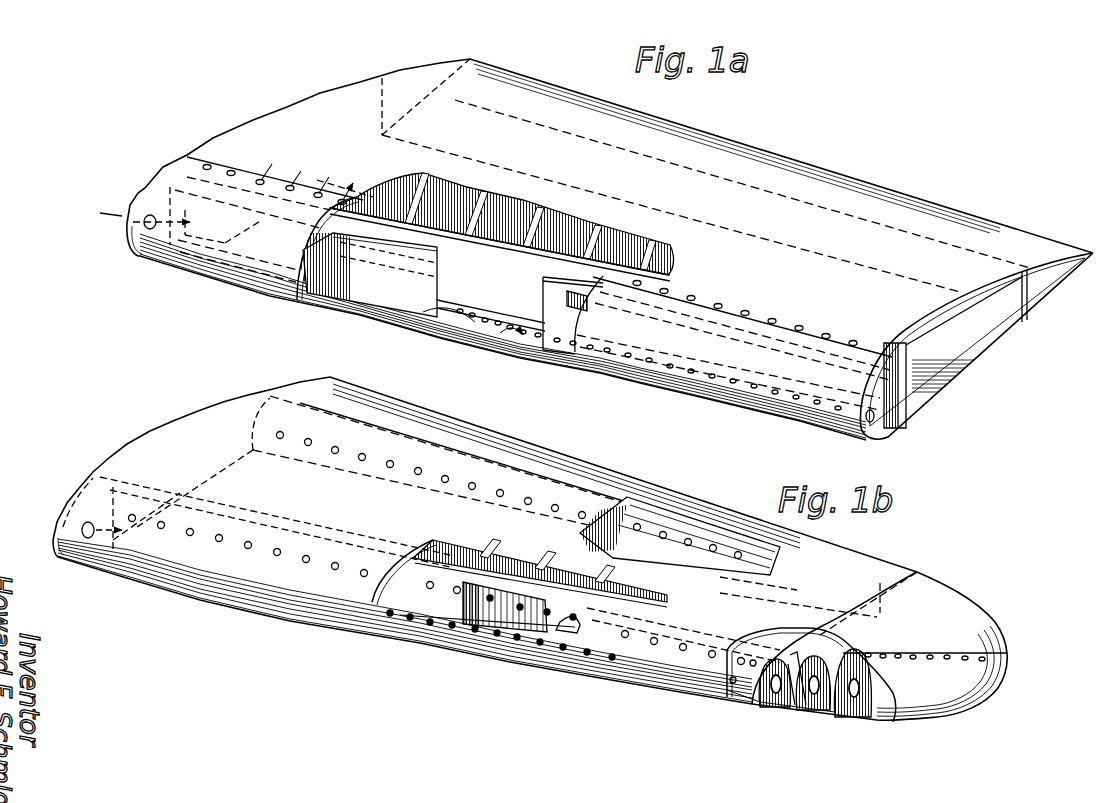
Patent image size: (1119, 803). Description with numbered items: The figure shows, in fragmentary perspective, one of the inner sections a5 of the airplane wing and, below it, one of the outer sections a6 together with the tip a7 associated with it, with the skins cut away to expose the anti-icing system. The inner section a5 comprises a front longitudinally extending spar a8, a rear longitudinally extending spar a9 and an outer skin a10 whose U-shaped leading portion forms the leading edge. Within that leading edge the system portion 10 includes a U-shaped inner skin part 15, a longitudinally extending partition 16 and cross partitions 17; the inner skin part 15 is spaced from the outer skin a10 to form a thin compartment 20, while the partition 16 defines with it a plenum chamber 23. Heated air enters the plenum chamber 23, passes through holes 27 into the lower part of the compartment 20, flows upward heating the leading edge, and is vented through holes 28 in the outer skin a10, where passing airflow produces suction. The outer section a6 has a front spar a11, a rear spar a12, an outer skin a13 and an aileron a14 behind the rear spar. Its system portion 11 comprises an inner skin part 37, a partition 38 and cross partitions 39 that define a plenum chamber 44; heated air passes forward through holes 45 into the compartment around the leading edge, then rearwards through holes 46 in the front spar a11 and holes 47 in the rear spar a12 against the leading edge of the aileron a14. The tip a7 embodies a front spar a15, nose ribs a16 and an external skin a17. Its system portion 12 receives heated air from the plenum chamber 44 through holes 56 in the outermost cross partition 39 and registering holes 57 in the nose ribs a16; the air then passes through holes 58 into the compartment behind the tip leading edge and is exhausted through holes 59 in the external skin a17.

In FIG. 1A, the system portions 10 is at (410, 297).
In FIG. 1B, the system portions 11 is at (427, 605).
In FIG. 1B, the system portions 12 is at (774, 707).
In FIG. 1A, the inner skin parts 15 is at (311, 250).
In FIG. 1A, the longitudinally extending partitions 16 is at (449, 290).
In FIG. 1A, the cross partitions 17 is at (871, 425).
In FIG. 1A, the compartments 20 is at (246, 236).
In FIG. 1A, the plenum chambers 23 is at (449, 330).
In FIG. 1A, the holes 27 is at (512, 320).
In FIG. 1A, the holes 28 is at (259, 178).
In FIG. 1B, the inner skin parts 37 is at (408, 605).
In FIG. 1B, the longitudinally extending partitions 38 is at (479, 607).
In FIG. 1B, the cross partitions 39 is at (60, 507).
In FIG. 1B, the plenum chambers 44 is at (484, 627).
In FIG. 1B, the holes 45 is at (612, 661).
In FIG. 1B, the holes 46 is at (548, 629).
In FIG. 1B, the holes 47 is at (738, 553).
In FIG. 1B, the holes 56 is at (745, 698).
In FIG. 1B, the holes 57 is at (811, 706).
In FIG. 1B, the holes 58 is at (795, 706).
In FIG. 1B, the holes 59 is at (949, 655).
In FIG. 1A, the inner sections a5 is at (895, 246).
In FIG. 1B, the outer sections a6 is at (509, 478).
In FIG. 1B, the tips a7 is at (937, 584).
In FIG. 1A, the front longitudinally extending spars a8 is at (928, 345).
In FIG. 1A, the rear longitudinally extending spars a9 is at (1012, 327).
In FIG. 1A, the outer skins a10 is at (946, 306).
In FIG. 1B, the front longitudinally extending spars a11 is at (557, 633).
In FIG. 1B, the rear longitudinally extending spars a12 is at (698, 528).
In FIG. 1B, the outer skins a13 is at (378, 600).
In FIG. 1B, the ailerons a14 is at (611, 478).
In FIG. 1B, the front spars a15 is at (856, 656).
In FIG. 1B, the nose ribs a16 is at (848, 712).
In FIG. 1B, the external skins a17 is at (892, 715).